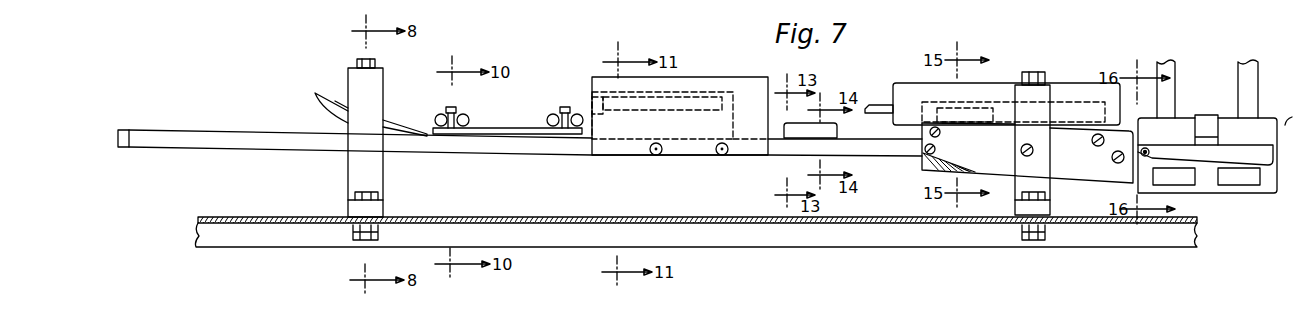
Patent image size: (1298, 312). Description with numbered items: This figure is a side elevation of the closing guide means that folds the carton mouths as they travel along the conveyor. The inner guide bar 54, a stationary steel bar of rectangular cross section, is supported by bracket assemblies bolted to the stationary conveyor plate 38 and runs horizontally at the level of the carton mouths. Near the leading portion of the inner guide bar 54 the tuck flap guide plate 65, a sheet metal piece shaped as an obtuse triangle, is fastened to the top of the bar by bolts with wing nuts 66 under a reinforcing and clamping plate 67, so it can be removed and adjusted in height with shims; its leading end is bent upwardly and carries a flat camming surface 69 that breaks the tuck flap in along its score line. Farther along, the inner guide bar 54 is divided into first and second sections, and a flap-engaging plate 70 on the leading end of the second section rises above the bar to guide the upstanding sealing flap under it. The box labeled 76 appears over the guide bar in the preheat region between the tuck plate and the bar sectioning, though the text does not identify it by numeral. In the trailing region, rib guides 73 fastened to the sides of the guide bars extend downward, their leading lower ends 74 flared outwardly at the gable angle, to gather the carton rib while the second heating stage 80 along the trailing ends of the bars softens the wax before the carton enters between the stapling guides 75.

The conveyor support plate 38 is at (535, 217).
The inner guide bar 54 is at (500, 150).
The tuck flap guide plate 65 is at (404, 128).
The wing nuts 66 is at (459, 115).
The reinforcing and clamping plate 67 is at (500, 130).
The flat camming surface 69 is at (322, 108).
The flap-engaging plate 70 is at (838, 128).
The rib guides 73 is at (1080, 174).
The leading lower ends 74 is at (922, 168).
The stapling guides 75 is at (1147, 150).
The housing 76 is at (696, 79).
The second heating stage 80 is at (977, 82).